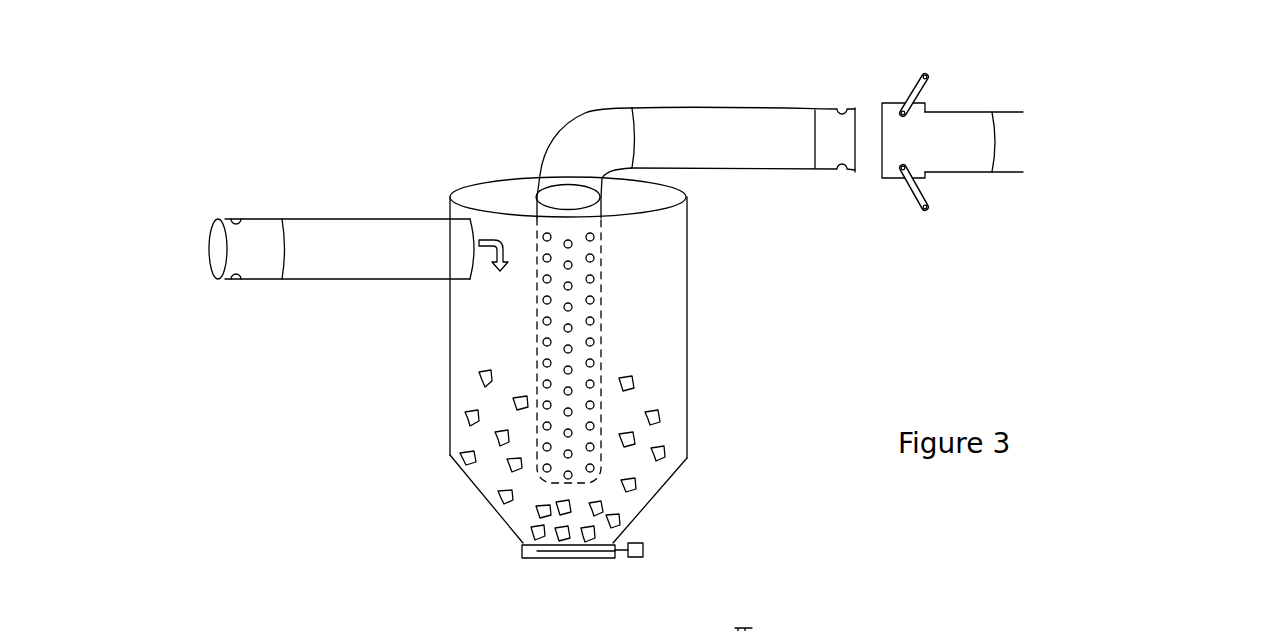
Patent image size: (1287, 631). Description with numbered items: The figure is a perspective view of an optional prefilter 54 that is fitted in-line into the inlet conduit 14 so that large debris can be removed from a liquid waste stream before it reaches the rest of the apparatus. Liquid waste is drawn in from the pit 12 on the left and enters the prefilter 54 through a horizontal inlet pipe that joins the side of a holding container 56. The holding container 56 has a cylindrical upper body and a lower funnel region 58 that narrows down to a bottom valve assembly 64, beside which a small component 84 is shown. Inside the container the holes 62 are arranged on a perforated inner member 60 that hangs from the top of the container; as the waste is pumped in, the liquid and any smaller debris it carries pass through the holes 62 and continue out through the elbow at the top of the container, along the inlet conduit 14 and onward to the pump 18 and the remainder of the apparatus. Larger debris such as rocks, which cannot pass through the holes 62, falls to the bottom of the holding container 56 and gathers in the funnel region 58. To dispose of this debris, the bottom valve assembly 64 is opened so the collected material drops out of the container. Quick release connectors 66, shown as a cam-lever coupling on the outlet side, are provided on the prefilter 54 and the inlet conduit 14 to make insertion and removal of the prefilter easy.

The prefilter 54 is at (402, 124).
The holding container 56 is at (688, 272).
The lower funnel region 58 is at (666, 492).
The inner perforated tube 60 is at (603, 344).
The holes 62 is at (593, 297).
The bottom valve assembly 64 is at (522, 553).
The valve actuator 84 is at (643, 557).
The quick release connectors 66 is at (898, 66).
The inlet conduit 14 is at (1007, 108).
The pump 18 is at (1010, 141).
The pit 12 is at (166, 252).